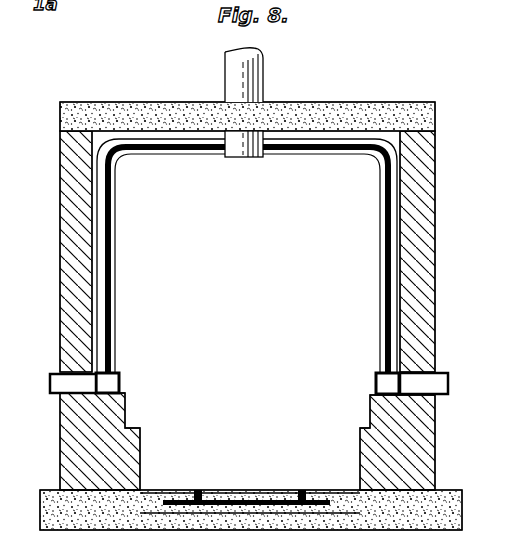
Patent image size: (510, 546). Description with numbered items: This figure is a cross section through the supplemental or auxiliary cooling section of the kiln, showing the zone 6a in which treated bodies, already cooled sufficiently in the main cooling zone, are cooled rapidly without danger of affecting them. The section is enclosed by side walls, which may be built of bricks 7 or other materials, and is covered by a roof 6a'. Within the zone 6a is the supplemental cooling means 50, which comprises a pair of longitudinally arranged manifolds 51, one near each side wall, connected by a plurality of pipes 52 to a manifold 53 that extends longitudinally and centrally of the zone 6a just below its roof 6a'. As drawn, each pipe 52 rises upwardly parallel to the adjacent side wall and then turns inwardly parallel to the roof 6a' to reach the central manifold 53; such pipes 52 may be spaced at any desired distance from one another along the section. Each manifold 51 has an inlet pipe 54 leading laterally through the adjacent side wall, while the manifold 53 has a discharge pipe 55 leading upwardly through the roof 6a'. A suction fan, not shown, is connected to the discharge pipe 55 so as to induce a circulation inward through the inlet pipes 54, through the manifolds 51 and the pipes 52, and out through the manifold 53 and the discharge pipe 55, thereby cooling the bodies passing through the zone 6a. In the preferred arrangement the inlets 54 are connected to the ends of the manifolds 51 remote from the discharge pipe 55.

The zone 6a is at (250, 403).
The roof 6a' is at (247, 101).
The bricks 7 is at (436, 293).
The supplemental cooling means 50 is at (318, 255).
The manifolds 51 is at (120, 380).
The pipes 52 is at (116, 293).
The manifold 53 is at (243, 160).
The inlet pipe 54 is at (50, 381).
The discharge pipe 55 is at (266, 78).